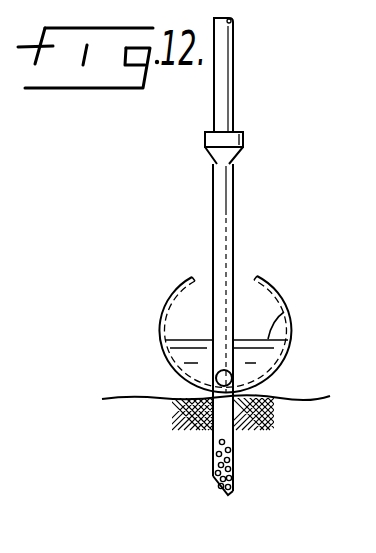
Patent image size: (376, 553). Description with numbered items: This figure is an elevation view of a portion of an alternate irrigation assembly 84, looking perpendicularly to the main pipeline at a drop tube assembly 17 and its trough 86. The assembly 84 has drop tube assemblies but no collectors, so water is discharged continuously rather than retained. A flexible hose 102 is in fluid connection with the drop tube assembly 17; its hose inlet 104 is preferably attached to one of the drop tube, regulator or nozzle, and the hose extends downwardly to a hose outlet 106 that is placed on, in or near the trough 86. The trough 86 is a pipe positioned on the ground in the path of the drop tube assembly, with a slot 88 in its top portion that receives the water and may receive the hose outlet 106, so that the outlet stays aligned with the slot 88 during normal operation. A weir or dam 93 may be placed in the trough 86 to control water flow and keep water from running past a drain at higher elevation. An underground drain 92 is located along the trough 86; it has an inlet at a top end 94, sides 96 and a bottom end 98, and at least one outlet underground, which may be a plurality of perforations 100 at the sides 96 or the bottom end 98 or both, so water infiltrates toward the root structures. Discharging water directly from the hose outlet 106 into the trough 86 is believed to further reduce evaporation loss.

The drop tube assembly 17 is at (241, 85).
The alternate irrigation assembly 84 is at (170, 236).
The trough 86 is at (160, 323).
The slot 88 is at (257, 273).
The underground drain 92 is at (244, 448).
The dam 93 is at (284, 312).
The top end 94 is at (264, 372).
The sides 96 is at (211, 452).
The bottom end 98 is at (221, 490).
The perforations 100 is at (236, 476).
The flexible hose 102 is at (233, 207).
The hose inlet 104 is at (230, 155).
The hose outlet 106 is at (215, 376).